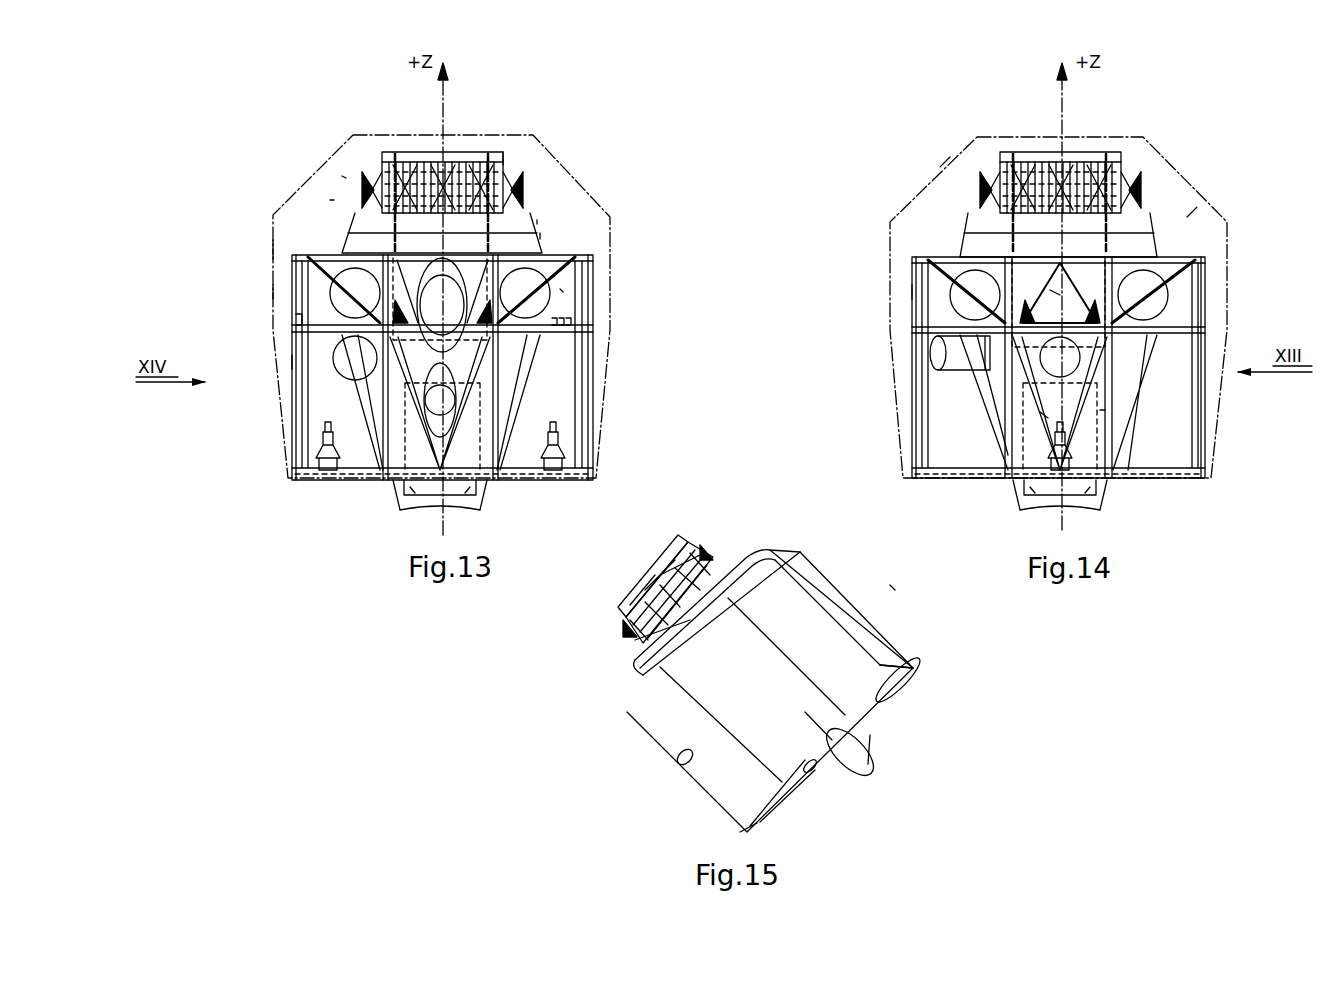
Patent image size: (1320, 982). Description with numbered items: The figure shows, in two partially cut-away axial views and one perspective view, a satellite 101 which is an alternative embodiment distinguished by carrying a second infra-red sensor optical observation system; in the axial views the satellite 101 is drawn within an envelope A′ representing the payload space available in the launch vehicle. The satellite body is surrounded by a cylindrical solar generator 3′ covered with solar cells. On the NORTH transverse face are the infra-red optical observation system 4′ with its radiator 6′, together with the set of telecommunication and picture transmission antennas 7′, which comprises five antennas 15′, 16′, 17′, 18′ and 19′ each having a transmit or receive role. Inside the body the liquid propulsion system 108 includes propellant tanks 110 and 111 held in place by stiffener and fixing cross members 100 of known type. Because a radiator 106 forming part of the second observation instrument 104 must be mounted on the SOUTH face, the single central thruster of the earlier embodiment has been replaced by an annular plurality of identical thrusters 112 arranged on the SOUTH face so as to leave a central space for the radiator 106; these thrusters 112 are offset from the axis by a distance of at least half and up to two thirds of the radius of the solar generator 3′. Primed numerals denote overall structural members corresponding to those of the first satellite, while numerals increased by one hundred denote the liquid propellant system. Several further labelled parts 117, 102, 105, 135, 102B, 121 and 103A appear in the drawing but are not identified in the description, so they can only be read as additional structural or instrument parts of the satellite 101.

In FIG. 13, the radiator 6′ is at (470, 152).
In FIG. 13, the antenna 19′ is at (507, 150).
In FIG. 13, the antenna 17′ is at (508, 160).
In FIG. 13, the antenna 18′ is at (522, 190).
In FIG. 13, the antenna 16′ is at (538, 222).
In FIG. 13, the antenna 15′ is at (541, 236).
In FIG. 13, the actuator 117 is at (342, 176).
In FIG. 13, the set of telecommunication and picture transmission antennas 7′ is at (332, 200).
In FIG. 13, the satellite 101 is at (276, 251).
In FIG. 14, the satellite 101 is at (1188, 217).
In FIG. 15, the satellite 101 is at (891, 585).
In FIG. 13, the envelope A′ is at (273, 292).
In FIG. 14, the envelope A′ is at (950, 157).
In FIG. 13, the solar generator 3′ is at (291, 362).
In FIG. 15, the solar generator 3′ is at (908, 650).
In FIG. 13, the propellant tank 110 is at (355, 293).
In FIG. 14, the propellant tank 110 is at (975, 293).
In FIG. 13, the propellant tank 111 is at (525, 293).
In FIG. 14, the propellant tank 111 is at (1150, 298).
In FIG. 13, the propulsion system 108 is at (563, 291).
In FIG. 13, the equipment compartment 102 is at (487, 345).
In FIG. 13, the tank 105 is at (352, 372).
In FIG. 14, the tank 105 is at (1060, 360).
In FIG. 13, the second observation instrument 104 is at (480, 412).
In FIG. 14, the second observation instrument 104 is at (990, 472).
In FIG. 13, the thrusters 112 is at (318, 446).
In FIG. 13, the radiator 106 is at (468, 502).
In FIG. 14, the radiator 106 is at (1100, 500).
In FIG. 15, the radiator 106 is at (863, 760).
In FIG. 14, the infra-red optical observation system 4′ is at (1055, 295).
In FIG. 14, the frame side wall 135 is at (913, 292).
In FIG. 14, the cylindrical unit 102B is at (925, 348).
In FIG. 14, the support structure 121 is at (1045, 415).
In FIG. 14, the stiffener and fixing cross members 100 is at (1100, 410).
In FIG. 15, the flange 103A is at (820, 577).